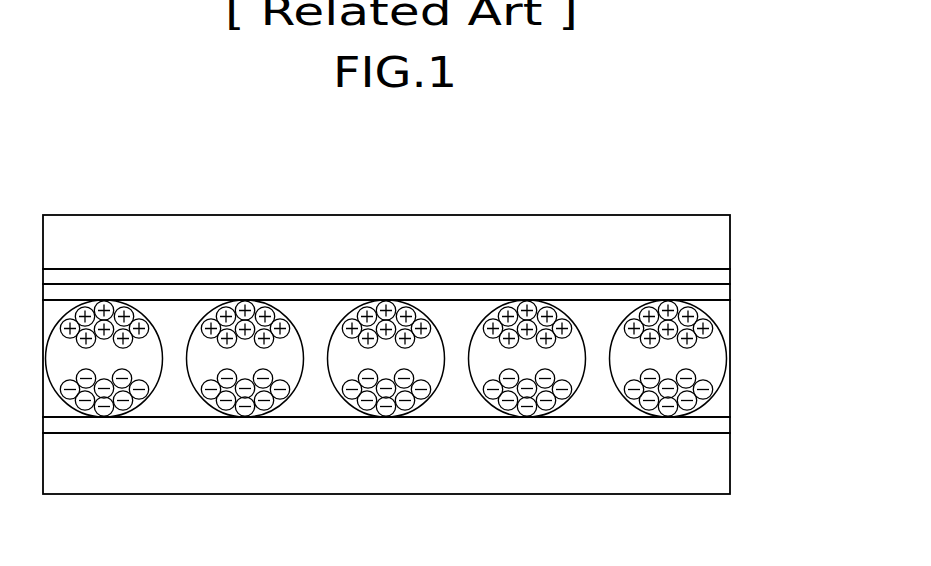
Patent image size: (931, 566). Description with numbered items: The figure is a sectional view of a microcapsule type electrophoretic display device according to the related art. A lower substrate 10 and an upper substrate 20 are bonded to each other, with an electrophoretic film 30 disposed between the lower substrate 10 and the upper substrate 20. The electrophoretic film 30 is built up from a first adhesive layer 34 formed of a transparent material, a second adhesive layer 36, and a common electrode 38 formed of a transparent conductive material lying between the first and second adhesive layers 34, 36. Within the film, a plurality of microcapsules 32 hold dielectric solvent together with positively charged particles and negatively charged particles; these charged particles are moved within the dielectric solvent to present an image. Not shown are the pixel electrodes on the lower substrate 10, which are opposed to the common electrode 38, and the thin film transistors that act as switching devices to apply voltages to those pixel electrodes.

The lower substrate 10 is at (725, 465).
The upper substrate 20 is at (725, 238).
The electrophoretic film 30 is at (458, 350).
The microcapsule 32 is at (725, 358).
The first adhesive layer 34 is at (421, 425).
The second adhesive layer 36 is at (725, 276).
The common electrode 38 is at (725, 295).